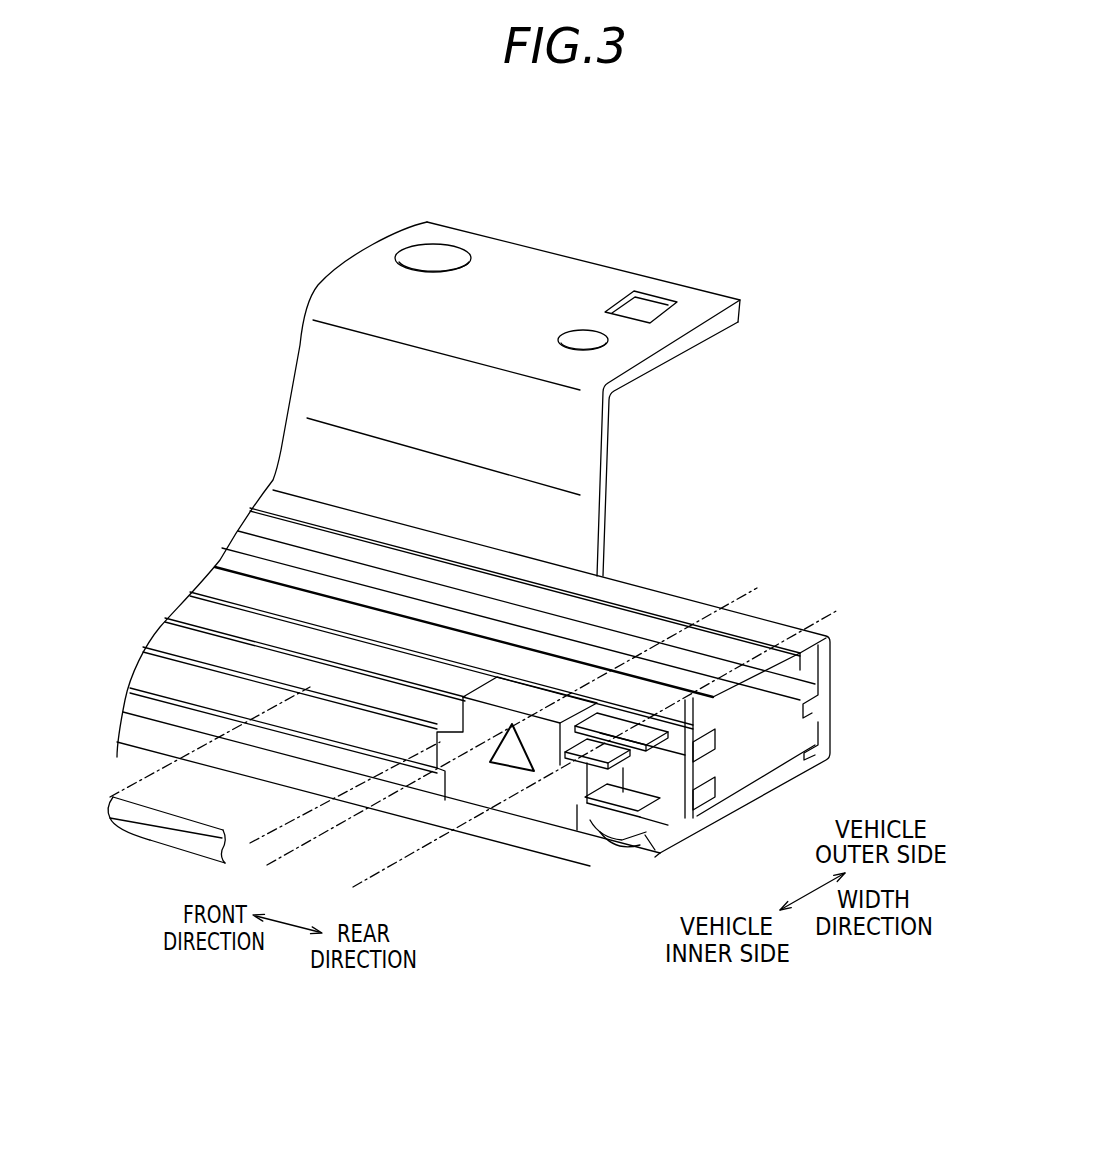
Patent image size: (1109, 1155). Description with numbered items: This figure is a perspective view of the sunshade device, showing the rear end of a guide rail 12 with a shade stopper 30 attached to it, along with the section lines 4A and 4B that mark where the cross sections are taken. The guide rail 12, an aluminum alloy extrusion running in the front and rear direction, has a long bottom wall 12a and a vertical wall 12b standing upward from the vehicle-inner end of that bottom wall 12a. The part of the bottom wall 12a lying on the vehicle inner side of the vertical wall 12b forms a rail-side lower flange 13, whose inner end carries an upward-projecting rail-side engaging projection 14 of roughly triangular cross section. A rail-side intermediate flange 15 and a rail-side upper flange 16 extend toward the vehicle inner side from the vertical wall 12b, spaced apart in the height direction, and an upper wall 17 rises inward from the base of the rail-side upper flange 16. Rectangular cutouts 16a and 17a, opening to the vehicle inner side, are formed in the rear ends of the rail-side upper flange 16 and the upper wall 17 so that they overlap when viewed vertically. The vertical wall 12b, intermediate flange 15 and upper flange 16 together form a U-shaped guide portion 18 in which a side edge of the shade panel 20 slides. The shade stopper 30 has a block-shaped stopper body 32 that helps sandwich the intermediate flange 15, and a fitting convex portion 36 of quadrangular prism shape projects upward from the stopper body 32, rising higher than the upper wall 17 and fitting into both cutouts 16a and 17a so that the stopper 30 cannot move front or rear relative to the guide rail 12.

The guide rail 12 is at (703, 582).
The bottom wall 12a is at (718, 824).
The vertical wall 12b is at (697, 780).
The rail-side lower flange 13 is at (678, 848).
The rail-side engaging projection 14 is at (632, 850).
The rail-side intermediate flange 15 is at (605, 842).
The rail-side upper flange 16 is at (560, 795).
The cutout 16a is at (545, 800).
The upper wall 17 is at (650, 718).
The cutout 17a is at (610, 735).
The guide portion 18 is at (327, 705).
The shade panel 20 is at (150, 842).
The shade stopper 30 is at (471, 682).
The stopper body 32 is at (420, 740).
The fitting convex portion 36 is at (520, 690).
The section line 4A is at (270, 866).
The section line 4B is at (356, 888).